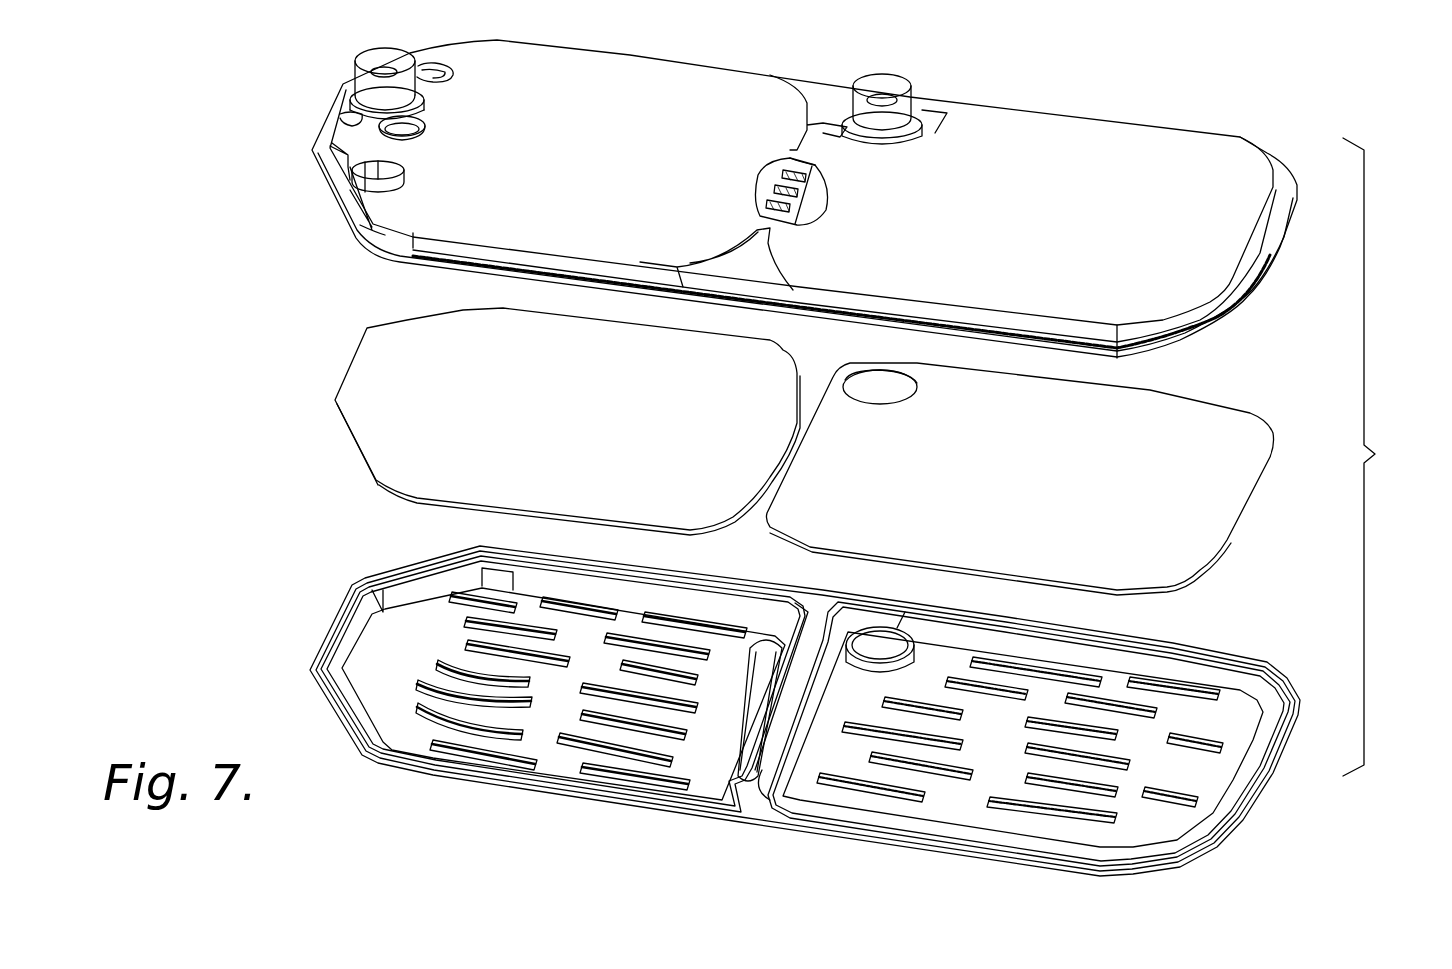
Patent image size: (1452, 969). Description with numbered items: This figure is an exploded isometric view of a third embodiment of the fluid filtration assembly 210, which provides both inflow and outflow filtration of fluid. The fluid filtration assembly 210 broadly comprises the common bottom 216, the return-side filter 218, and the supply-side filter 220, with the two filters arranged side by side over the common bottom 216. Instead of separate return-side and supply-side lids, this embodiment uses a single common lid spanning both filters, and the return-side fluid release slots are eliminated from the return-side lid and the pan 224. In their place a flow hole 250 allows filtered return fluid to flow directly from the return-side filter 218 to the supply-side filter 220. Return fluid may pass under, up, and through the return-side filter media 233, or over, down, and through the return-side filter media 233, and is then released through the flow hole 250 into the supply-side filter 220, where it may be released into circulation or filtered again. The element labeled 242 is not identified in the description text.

The fluid filtration assembly 210 is at (1388, 457).
The common bottom 216 is at (740, 800).
The return-side filter 218 is at (1034, 78).
The supply-side filter 220 is at (726, 46).
The pan 224 is at (878, 852).
The return-side filter media 233 is at (1207, 528).
The cover plate 242 is at (360, 372).
The flow hole 250 is at (752, 158).